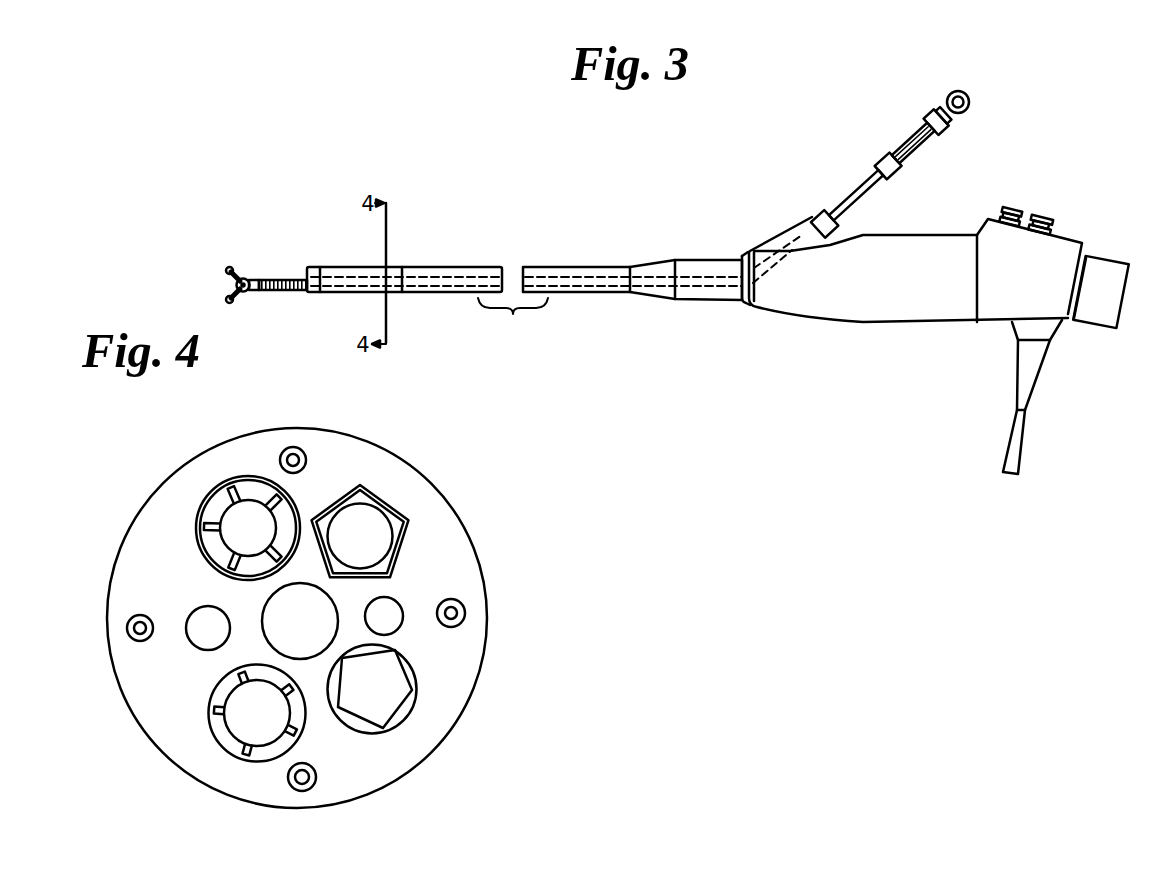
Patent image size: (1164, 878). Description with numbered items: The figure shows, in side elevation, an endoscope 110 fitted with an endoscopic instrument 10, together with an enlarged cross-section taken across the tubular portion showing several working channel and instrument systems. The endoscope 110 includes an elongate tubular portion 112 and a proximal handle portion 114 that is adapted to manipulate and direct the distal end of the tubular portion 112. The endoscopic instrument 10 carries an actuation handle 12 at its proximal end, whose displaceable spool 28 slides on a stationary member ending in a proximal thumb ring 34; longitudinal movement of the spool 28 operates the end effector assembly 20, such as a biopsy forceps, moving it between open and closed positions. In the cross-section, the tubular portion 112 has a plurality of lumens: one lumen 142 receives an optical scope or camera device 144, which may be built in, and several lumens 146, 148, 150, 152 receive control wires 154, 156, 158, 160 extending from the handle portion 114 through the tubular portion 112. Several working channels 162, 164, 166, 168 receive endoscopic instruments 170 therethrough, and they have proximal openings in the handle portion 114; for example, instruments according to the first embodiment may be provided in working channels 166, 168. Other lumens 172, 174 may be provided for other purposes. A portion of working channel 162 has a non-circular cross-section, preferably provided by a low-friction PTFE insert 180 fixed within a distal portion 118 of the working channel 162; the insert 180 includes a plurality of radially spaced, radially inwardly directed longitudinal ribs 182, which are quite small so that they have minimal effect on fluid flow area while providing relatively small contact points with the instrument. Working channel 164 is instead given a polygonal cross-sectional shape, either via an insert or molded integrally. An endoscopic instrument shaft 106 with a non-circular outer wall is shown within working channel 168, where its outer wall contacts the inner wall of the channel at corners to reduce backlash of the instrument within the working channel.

In FIG. 4, the endoscopic instrument 10 is at (260, 742).
In FIG. 3, the actuation handle 12 is at (934, 94).
In FIG. 3, the end effector assembly 20 is at (248, 268).
In FIG. 3, the displaceable spool 28 is at (943, 126).
In FIG. 3, the proximal thumb ring 34 is at (967, 93).
In FIG. 4, the endoscopic instrument shaft 106 is at (411, 683).
In FIG. 3, the endoscope 110 is at (683, 230).
In FIG. 3, the elongate tubular portion 112 is at (557, 264).
In FIG. 3, the proximal handle portion 114 is at (1058, 262).
In FIG. 3, the distal portion of the working channel 118 is at (393, 293).
In FIG. 4, the lumen 142 is at (252, 655).
In FIG. 4, the optical scope or camera device 144 is at (318, 620).
In FIG. 4, the lumen 146 is at (306, 456).
In FIG. 4, the lumen 148 is at (453, 626).
In FIG. 4, the lumen 150 is at (313, 787).
In FIG. 4, the lumen 152 is at (128, 631).
In FIG. 4, the control wire 154 is at (288, 452).
In FIG. 4, the control wire 156 is at (464, 610).
In FIG. 4, the control wire 158 is at (296, 789).
In FIG. 4, the control wire 160 is at (139, 615).
In FIG. 4, the working channel 162 is at (247, 524).
In FIG. 4, the working channel 164 is at (392, 518).
In FIG. 4, the working channel 166 is at (213, 740).
In FIG. 4, the working channel 168 is at (404, 722).
In FIG. 4, the endoscopic instrument 170 is at (201, 500).
In FIG. 4, the lumen 172 is at (195, 636).
In FIG. 4, the lumen 174 is at (393, 620).
In FIG. 4, the insert 180 is at (192, 552).
In FIG. 4, the longitudinal ribs 182 is at (252, 476).